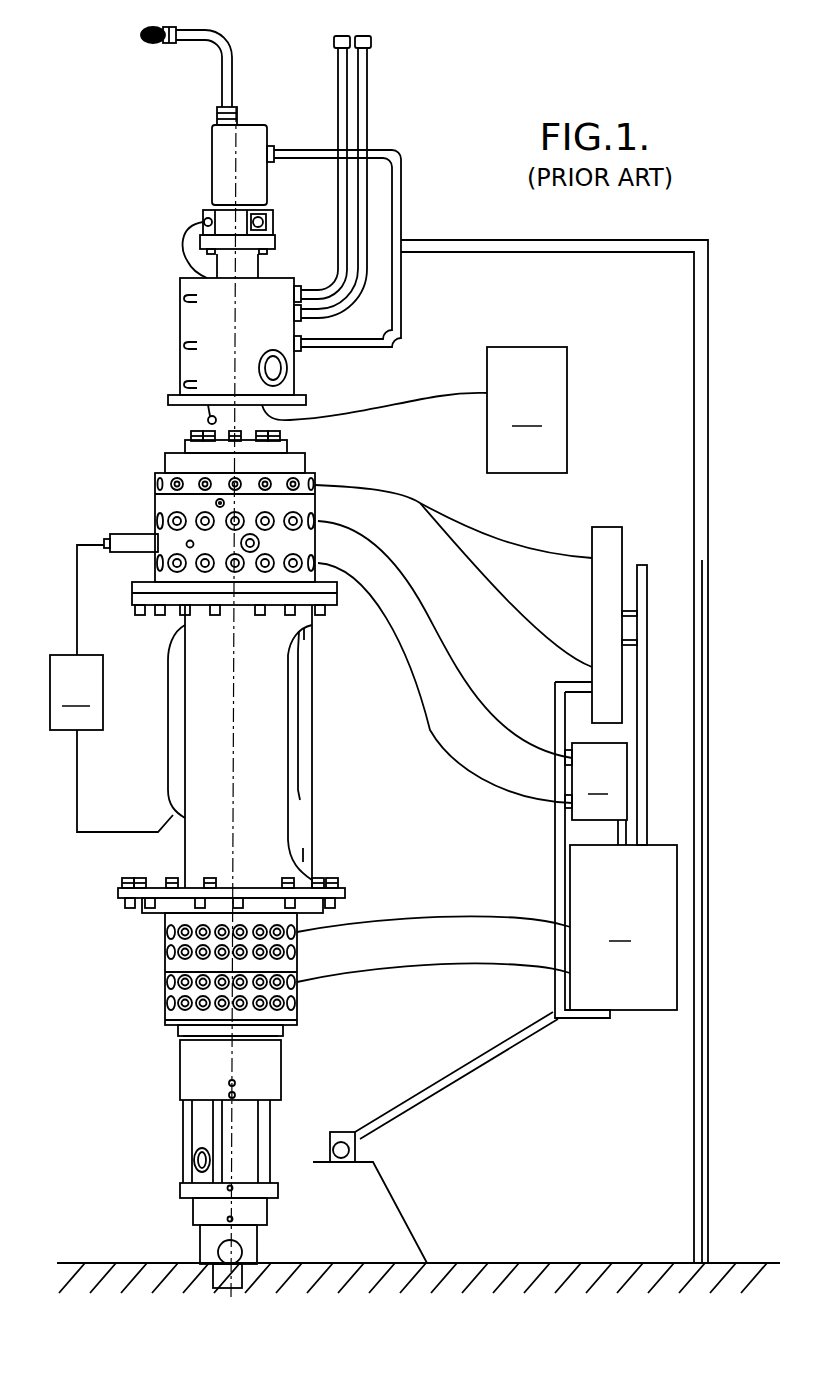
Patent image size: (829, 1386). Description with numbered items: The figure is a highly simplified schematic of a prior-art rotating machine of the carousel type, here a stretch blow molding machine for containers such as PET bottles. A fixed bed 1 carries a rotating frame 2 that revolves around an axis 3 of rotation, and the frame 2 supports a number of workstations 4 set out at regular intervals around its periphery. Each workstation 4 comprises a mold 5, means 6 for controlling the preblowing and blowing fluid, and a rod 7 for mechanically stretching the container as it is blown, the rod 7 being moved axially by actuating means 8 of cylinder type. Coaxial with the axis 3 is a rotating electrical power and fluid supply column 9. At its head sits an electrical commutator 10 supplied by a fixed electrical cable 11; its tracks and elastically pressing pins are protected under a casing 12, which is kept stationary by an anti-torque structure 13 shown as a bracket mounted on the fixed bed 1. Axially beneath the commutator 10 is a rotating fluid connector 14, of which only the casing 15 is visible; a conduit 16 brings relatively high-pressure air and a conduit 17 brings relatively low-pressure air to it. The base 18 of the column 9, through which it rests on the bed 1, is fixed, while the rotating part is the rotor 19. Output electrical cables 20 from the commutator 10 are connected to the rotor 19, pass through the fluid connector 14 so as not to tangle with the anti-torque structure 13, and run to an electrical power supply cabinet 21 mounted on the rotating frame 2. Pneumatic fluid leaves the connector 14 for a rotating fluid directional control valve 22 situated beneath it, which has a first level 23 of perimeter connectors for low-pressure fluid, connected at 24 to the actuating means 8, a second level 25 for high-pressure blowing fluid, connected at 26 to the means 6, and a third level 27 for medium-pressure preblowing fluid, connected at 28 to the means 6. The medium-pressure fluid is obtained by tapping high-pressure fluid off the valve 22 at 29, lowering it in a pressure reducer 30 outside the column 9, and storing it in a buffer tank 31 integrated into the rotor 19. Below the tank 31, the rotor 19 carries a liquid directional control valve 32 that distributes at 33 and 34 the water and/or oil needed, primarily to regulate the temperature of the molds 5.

The fixed bed 1 is at (405, 1257).
The rotating frame 2 is at (462, 1079).
The axis of rotation 3 is at (228, 1307).
The workstation 4 is at (616, 850).
The mold 5 is at (657, 838).
The means for controlling the preblowing fluid and the blowing fluid 6 is at (599, 781).
The rod 7 is at (644, 625).
The actuating means 8 is at (603, 553).
The rotating electrical power and fluid supply column 9 is at (186, 980).
The electrical commutator 10 is at (198, 165).
The fixed electrical cable 11 is at (222, 63).
The casing 12 is at (247, 173).
The anti-torque structure 13 is at (449, 249).
The rotating fluid connector 14 is at (209, 341).
The casing 15 is at (190, 368).
The conduit 16 is at (340, 83).
The conduit 17 is at (367, 88).
The base 18 is at (178, 1082).
The rotor 19 is at (257, 759).
The output electrical cables 20 is at (183, 243).
The electrical power supply cabinet 21 is at (541, 519).
The rotating fluid directional control valve 22 is at (244, 518).
The first level of connectors 23 is at (176, 480).
The connection 24 is at (537, 553).
The second level of connectors 25 is at (175, 517).
The connection 26 is at (462, 687).
The third level of connectors 27 is at (176, 563).
The connection 28 is at (430, 728).
The tapping point 29 is at (134, 542).
The pressure reducer 30 is at (111, 688).
The buffer tank 31 is at (177, 761).
The liquid directional control valve 32 is at (163, 991).
The liquid distribution connection 33 is at (468, 917).
The liquid distribution connection 34 is at (428, 968).